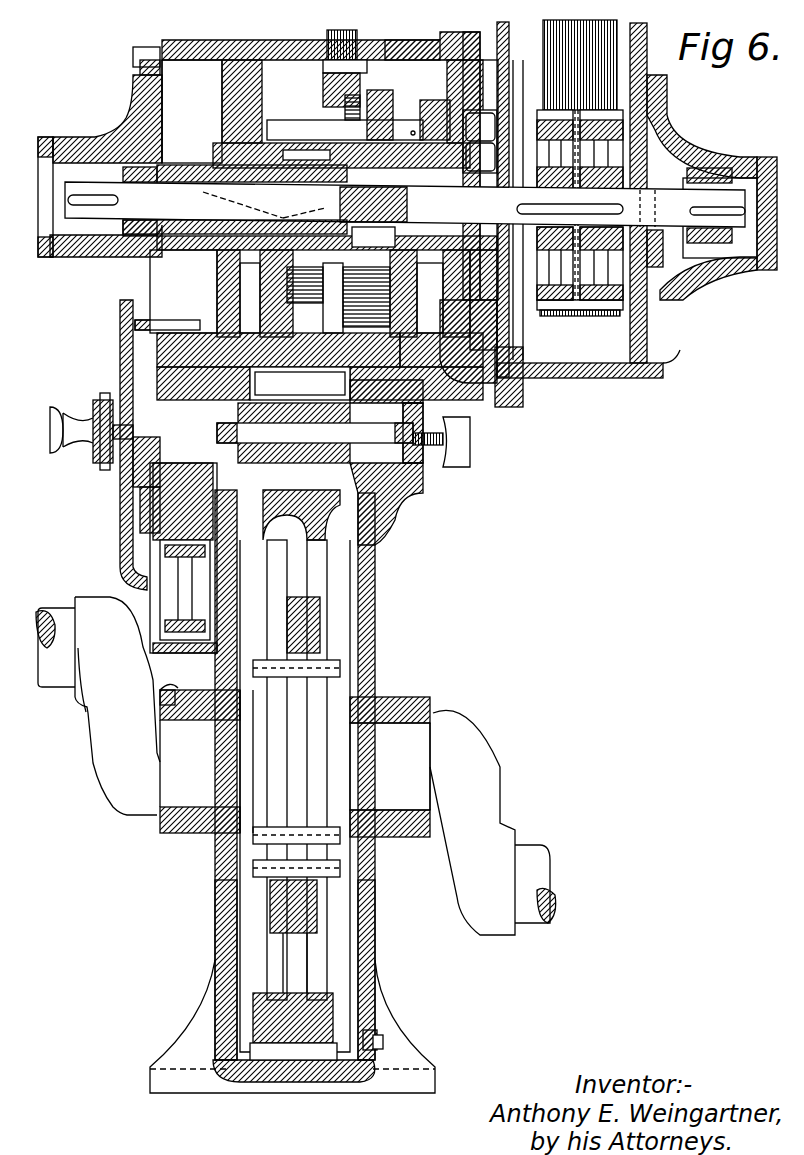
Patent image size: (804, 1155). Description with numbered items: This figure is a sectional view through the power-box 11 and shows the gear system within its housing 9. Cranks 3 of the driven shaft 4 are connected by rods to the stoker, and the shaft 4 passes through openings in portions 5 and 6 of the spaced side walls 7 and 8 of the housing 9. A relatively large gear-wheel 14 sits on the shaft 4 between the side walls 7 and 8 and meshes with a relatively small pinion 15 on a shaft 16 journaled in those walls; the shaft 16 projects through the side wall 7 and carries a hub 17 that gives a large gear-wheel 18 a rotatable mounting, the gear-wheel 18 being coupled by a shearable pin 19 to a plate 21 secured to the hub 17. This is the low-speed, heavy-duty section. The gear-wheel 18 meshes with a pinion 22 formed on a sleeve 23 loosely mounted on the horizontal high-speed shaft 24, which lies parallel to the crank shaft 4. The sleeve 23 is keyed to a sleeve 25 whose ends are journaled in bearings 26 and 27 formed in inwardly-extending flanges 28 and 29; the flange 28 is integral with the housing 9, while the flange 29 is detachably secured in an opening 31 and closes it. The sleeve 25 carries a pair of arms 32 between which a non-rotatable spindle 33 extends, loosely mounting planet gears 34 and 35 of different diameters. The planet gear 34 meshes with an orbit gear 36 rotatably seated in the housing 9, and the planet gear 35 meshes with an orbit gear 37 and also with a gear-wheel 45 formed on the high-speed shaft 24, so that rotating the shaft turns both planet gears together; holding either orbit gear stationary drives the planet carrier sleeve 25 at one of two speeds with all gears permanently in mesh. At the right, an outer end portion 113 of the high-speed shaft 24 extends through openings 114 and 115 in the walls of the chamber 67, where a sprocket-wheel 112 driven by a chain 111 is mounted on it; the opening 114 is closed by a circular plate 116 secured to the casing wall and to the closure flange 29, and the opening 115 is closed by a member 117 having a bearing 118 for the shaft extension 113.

The cranks 3 is at (480, 773).
The driven shaft 4 is at (390, 750).
The portion of side wall 5 is at (177, 703).
The portion of side wall 6 is at (417, 710).
The side wall 7 is at (213, 937).
The side wall 8 is at (363, 938).
The housing 9 is at (257, 42).
The power-box 11 is at (353, 577).
The gear-wheel 14 is at (307, 540).
The pinion 15 is at (423, 493).
The shaft 16 is at (427, 463).
The hub 17 is at (123, 487).
The gear-wheel 18 is at (180, 573).
The shearable pin 19 is at (130, 343).
The plate 21 is at (143, 363).
The pinion 22 is at (173, 243).
The sleeve 23 is at (153, 240).
The high-speed shaft 24 is at (103, 210).
The sleeve 25 is at (213, 163).
The bearing 26 is at (217, 143).
The bearing 27 is at (482, 154).
The flange 28 is at (253, 140).
The flange 29 is at (455, 145).
The opening 31 is at (450, 33).
The arms 32 is at (310, 95).
The spindle 33 is at (423, 113).
The planet gear 34 is at (285, 187).
The planet gear 35 is at (336, 259).
The orbit gear 36 is at (318, 60).
The orbit gear 37 is at (386, 42).
The gear-wheel 45 is at (407, 190).
The chamber 67 is at (627, 43).
The chain 111 is at (600, 43).
The sprocket-wheel 112 is at (600, 309).
The outer end portion 113 is at (405, 207).
The opening 114 is at (520, 157).
The opening 115 is at (637, 143).
The circular plate 116 is at (488, 62).
The member 117 is at (687, 148).
The bearing 118 is at (683, 187).